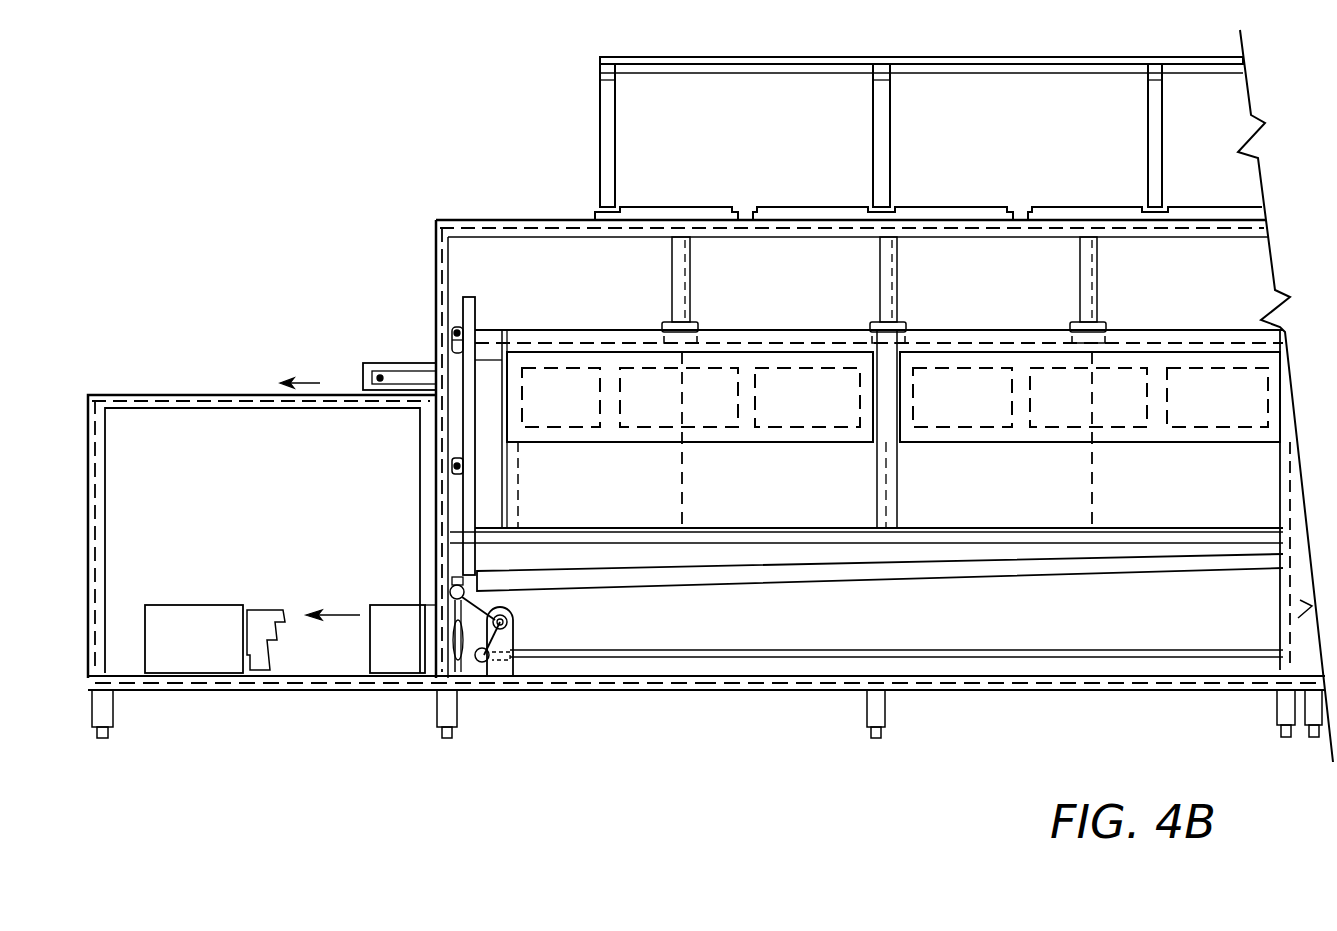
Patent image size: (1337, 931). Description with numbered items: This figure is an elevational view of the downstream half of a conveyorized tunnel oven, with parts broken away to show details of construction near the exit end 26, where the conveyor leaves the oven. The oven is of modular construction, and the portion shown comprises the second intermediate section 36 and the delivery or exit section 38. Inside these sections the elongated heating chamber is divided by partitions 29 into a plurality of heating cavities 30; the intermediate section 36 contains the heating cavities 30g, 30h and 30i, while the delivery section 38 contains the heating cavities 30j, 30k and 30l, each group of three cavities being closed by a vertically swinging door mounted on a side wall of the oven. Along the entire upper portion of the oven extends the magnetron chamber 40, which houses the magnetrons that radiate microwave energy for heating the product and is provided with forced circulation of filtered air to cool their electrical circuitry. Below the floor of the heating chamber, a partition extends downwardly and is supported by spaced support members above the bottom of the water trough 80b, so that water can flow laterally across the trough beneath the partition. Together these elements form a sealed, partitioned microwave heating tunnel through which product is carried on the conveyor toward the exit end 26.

The exit end 26 is at (235, 395).
The partitions 29 is at (745, 390).
The heating cavities 30 is at (1236, 395).
The heating cavity 30l is at (545, 414).
The heating cavity 30k is at (657, 414).
The heating cavity 30j is at (773, 417).
The heating cavity 30i is at (930, 414).
The heating cavity 30h is at (1113, 410).
The heating cavity 30g is at (1247, 413).
The intermediate section 36 is at (1045, 693).
The delivery section 38 is at (700, 693).
The magnetron chamber 40 is at (640, 128).
The water trough 80b is at (683, 575).